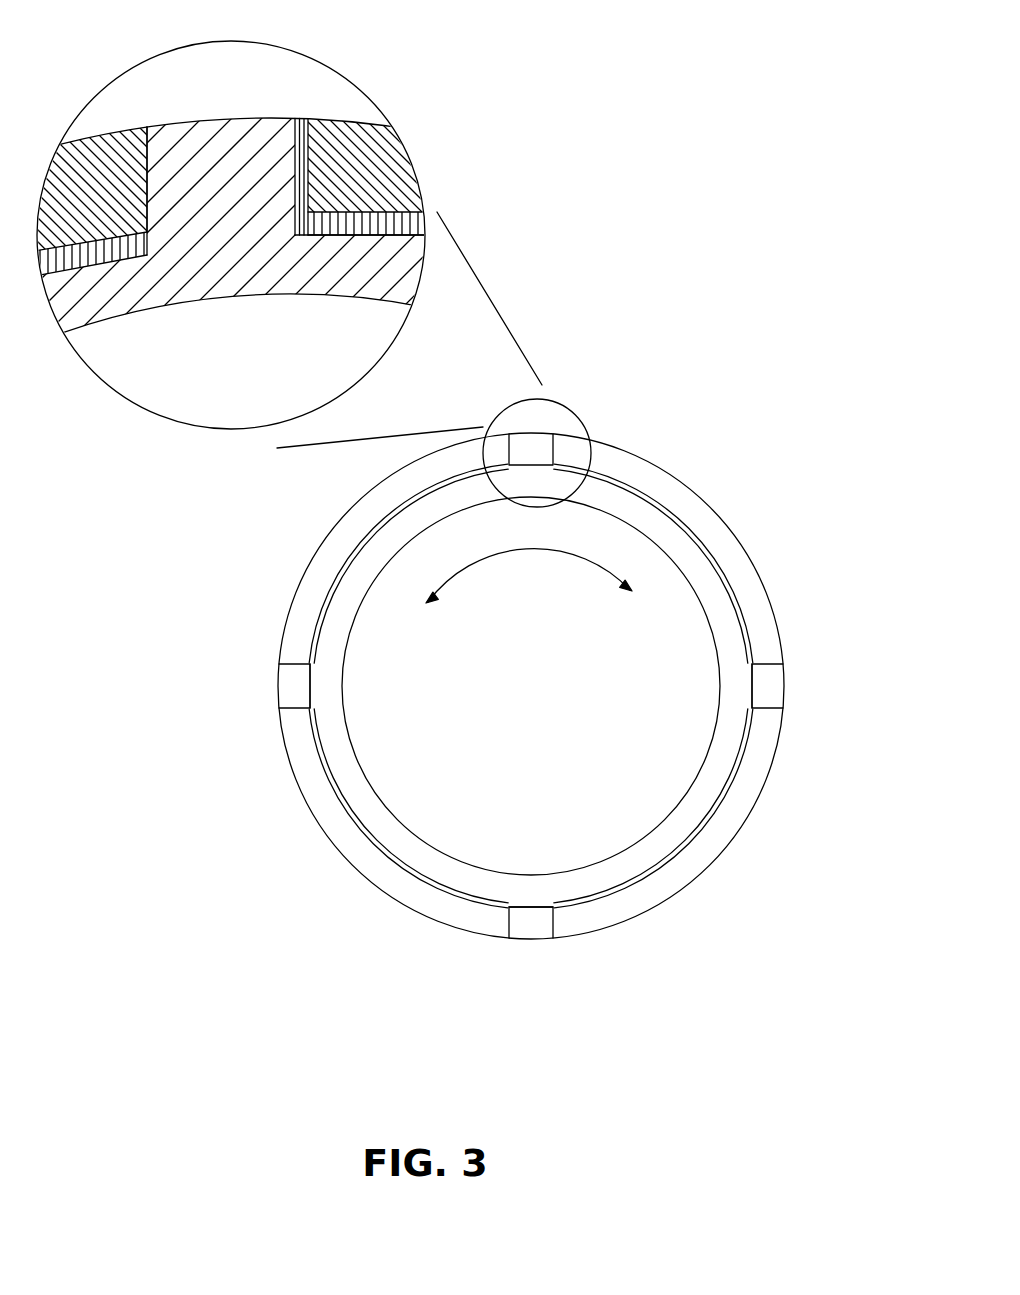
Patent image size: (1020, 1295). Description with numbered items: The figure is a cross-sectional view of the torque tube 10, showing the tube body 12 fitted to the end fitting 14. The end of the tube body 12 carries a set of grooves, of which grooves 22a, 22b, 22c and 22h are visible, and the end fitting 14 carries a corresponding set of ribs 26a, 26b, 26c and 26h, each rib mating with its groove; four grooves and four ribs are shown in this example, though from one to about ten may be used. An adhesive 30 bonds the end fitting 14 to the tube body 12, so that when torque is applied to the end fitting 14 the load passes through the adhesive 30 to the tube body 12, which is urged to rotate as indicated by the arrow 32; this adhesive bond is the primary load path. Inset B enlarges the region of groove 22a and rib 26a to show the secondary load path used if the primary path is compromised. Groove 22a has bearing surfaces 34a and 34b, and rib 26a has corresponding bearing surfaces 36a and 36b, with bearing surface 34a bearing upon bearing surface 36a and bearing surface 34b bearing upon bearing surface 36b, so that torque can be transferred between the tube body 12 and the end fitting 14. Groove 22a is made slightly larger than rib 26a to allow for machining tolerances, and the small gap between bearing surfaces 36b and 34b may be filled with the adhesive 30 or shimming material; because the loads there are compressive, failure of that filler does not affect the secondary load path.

The torque tube 10 is at (768, 350).
The tube body 12 is at (723, 518).
The end fitting 14 is at (398, 822).
The groove 22a is at (600, 392).
The groove 22b is at (800, 705).
The groove 22c is at (500, 950).
The groove 22h is at (260, 722).
The rib 26a is at (548, 432).
The rib 26b is at (783, 680).
The rib 26c is at (530, 940).
The rib 26h is at (258, 683).
The adhesive 30 is at (742, 607).
The arrow 32 is at (530, 550).
The bearing surface 34a is at (143, 178).
The bearing surface 34b is at (315, 152).
The bearing surface 36a is at (155, 178).
The bearing surface 36b is at (290, 145).
The inset B is at (447, 138).